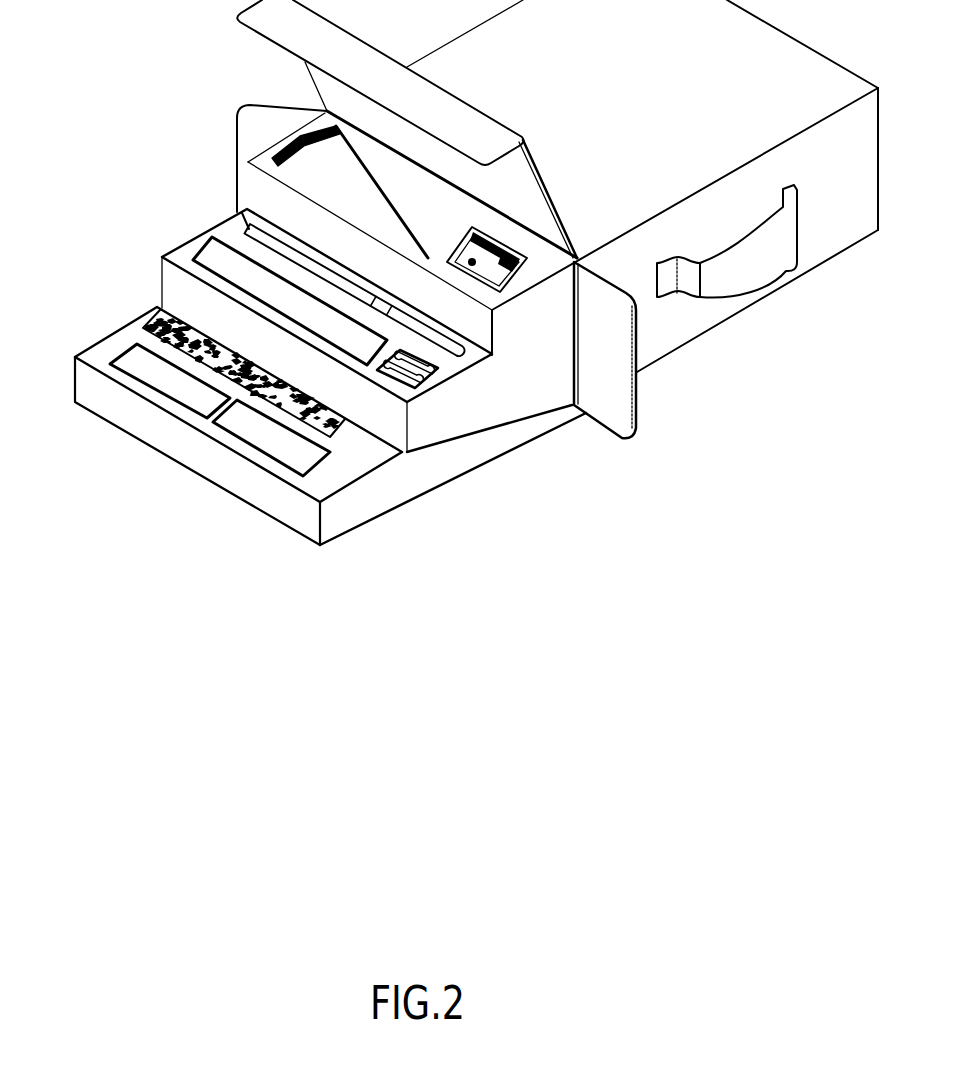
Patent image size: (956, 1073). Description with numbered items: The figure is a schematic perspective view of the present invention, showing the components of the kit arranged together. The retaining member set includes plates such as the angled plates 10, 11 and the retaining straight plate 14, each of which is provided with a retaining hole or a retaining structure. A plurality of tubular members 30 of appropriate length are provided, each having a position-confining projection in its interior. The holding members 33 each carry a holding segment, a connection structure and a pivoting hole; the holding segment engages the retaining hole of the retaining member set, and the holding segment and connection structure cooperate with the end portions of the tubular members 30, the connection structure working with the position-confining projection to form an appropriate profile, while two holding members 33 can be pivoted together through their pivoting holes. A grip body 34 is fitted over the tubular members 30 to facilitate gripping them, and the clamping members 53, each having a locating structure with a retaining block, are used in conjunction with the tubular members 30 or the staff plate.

The angled plate 10 is at (480, 290).
The angled plate 11 is at (338, 173).
The tubular member 30 is at (258, 226).
The clamping member 53 is at (157, 318).
The retaining straight plate 14 is at (173, 383).
The holding member 33 is at (413, 392).
The grip body 34 is at (446, 362).